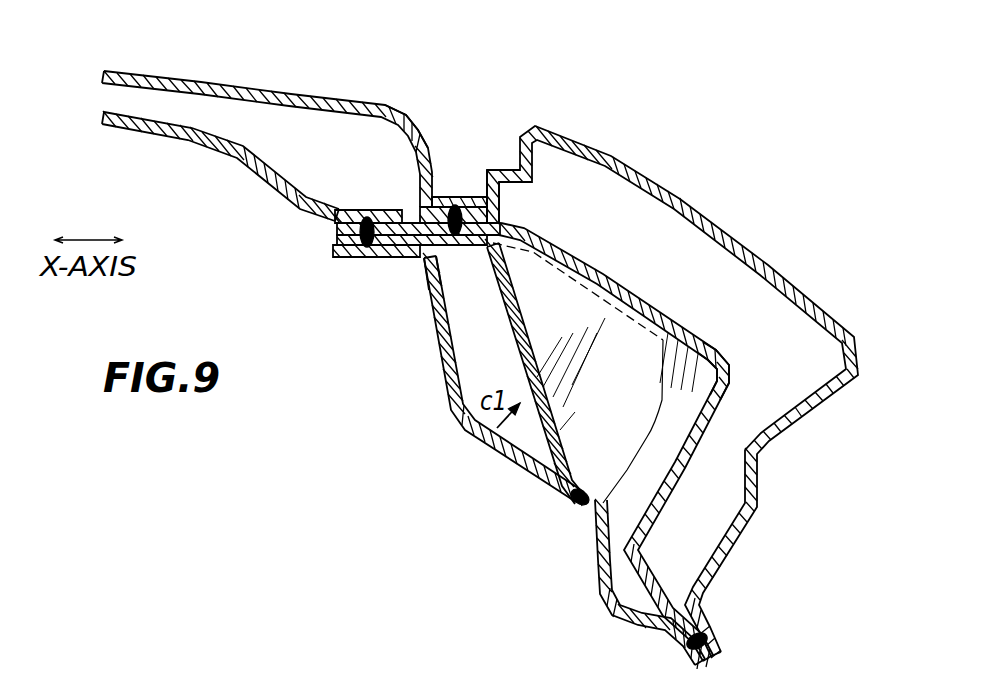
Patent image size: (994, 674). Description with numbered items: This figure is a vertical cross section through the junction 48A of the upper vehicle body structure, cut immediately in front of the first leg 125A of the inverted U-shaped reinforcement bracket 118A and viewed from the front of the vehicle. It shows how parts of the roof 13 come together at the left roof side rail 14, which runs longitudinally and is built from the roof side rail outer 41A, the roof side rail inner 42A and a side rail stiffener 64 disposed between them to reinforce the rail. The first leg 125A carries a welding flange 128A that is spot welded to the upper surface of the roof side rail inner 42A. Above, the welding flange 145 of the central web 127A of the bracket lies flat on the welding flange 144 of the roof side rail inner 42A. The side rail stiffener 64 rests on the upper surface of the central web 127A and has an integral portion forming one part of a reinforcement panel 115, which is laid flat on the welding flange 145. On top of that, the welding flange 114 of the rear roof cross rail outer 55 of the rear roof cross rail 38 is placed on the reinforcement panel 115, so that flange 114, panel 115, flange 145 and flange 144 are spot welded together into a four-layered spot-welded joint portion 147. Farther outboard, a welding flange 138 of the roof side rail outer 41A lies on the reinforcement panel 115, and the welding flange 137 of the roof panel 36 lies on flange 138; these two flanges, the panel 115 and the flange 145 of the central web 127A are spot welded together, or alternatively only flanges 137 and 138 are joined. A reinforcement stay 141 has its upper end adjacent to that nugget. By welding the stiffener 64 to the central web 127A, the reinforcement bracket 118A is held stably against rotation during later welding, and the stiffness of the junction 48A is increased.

The roof 13 is at (267, 112).
The roof panel 36 is at (213, 83).
The junction 48A is at (404, 91).
The rear roof cross rail 38 is at (196, 177).
The rear roof cross rail outer 55 is at (237, 168).
The welding flange 114 is at (395, 210).
The reinforcement panel 115 is at (415, 223).
The four-layered spot-welded joint portion 147 is at (310, 243).
The welding flange 144 is at (367, 256).
The welding flange 145 is at (432, 262).
The welding flange 137 is at (441, 193).
The welding flange 138 is at (478, 204).
The left roof side rail 14 is at (578, 352).
The roof side rail outer 41A is at (677, 360).
The reinforcement bracket 118A is at (447, 365).
The roof side rail inner 42A is at (566, 445).
The side rail stiffener 64 is at (736, 364).
The reinforcement stay 141 is at (505, 354).
The central web 127A is at (590, 291).
The first leg 125A is at (593, 428).
The welding flange 128A is at (577, 500).